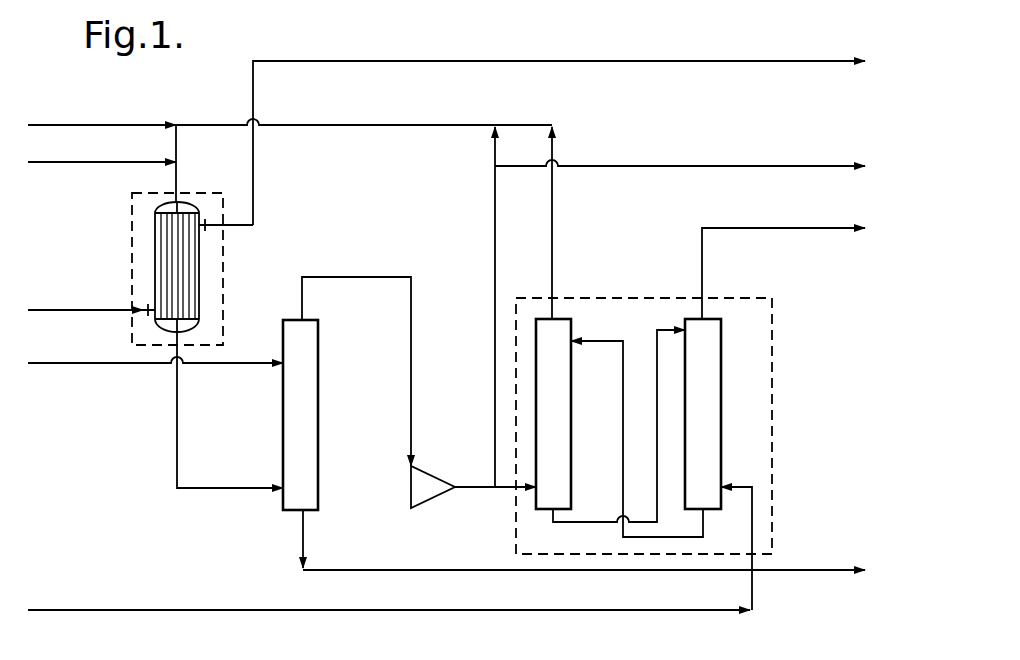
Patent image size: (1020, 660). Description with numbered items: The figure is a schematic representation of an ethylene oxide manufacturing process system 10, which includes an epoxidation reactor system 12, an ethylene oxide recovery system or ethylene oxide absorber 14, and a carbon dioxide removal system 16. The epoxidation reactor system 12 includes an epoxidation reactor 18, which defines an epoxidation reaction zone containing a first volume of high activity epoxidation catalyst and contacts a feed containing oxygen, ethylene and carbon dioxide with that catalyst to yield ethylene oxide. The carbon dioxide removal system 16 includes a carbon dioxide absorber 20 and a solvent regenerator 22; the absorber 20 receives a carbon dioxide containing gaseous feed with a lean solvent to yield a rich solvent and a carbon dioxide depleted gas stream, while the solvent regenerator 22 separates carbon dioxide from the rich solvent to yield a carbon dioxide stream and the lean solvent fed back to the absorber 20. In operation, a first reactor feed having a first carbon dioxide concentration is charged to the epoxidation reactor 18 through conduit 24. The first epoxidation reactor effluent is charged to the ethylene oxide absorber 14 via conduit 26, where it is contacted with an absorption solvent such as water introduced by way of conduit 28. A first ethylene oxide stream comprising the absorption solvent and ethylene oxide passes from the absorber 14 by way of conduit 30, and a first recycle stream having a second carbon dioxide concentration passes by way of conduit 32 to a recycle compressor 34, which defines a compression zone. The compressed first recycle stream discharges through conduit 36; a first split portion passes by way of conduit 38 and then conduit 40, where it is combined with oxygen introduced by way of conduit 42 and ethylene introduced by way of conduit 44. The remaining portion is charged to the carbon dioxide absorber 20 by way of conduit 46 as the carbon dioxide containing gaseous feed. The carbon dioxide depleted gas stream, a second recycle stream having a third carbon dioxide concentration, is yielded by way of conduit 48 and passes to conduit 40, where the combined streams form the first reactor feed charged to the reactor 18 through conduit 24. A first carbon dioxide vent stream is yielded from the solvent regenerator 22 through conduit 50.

The ethylene oxide manufacturing process system 10 is at (517, 55).
The epoxidation reactor system 12 is at (223, 274).
The ethylene oxide absorber 14 is at (319, 391).
The carbon dioxide removal system 16 is at (772, 375).
The epoxidation reactor 18 is at (199, 303).
The carbon dioxide absorber 20 is at (572, 425).
The solvent regenerator 22 is at (722, 425).
The conduit 24 is at (181, 173).
The conduit 26 is at (178, 426).
The conduit 28 is at (74, 363).
The conduit 30 is at (366, 568).
The conduit 32 is at (354, 276).
The recycle compressor 34 is at (411, 488).
The conduit 36 is at (471, 487).
The conduit 38 is at (495, 226).
The conduit 40 is at (348, 123).
The conduit 42 is at (78, 123).
The conduit 44 is at (77, 163).
The conduit 46 is at (500, 488).
The conduit 48 is at (552, 228).
The conduit 50 is at (734, 228).